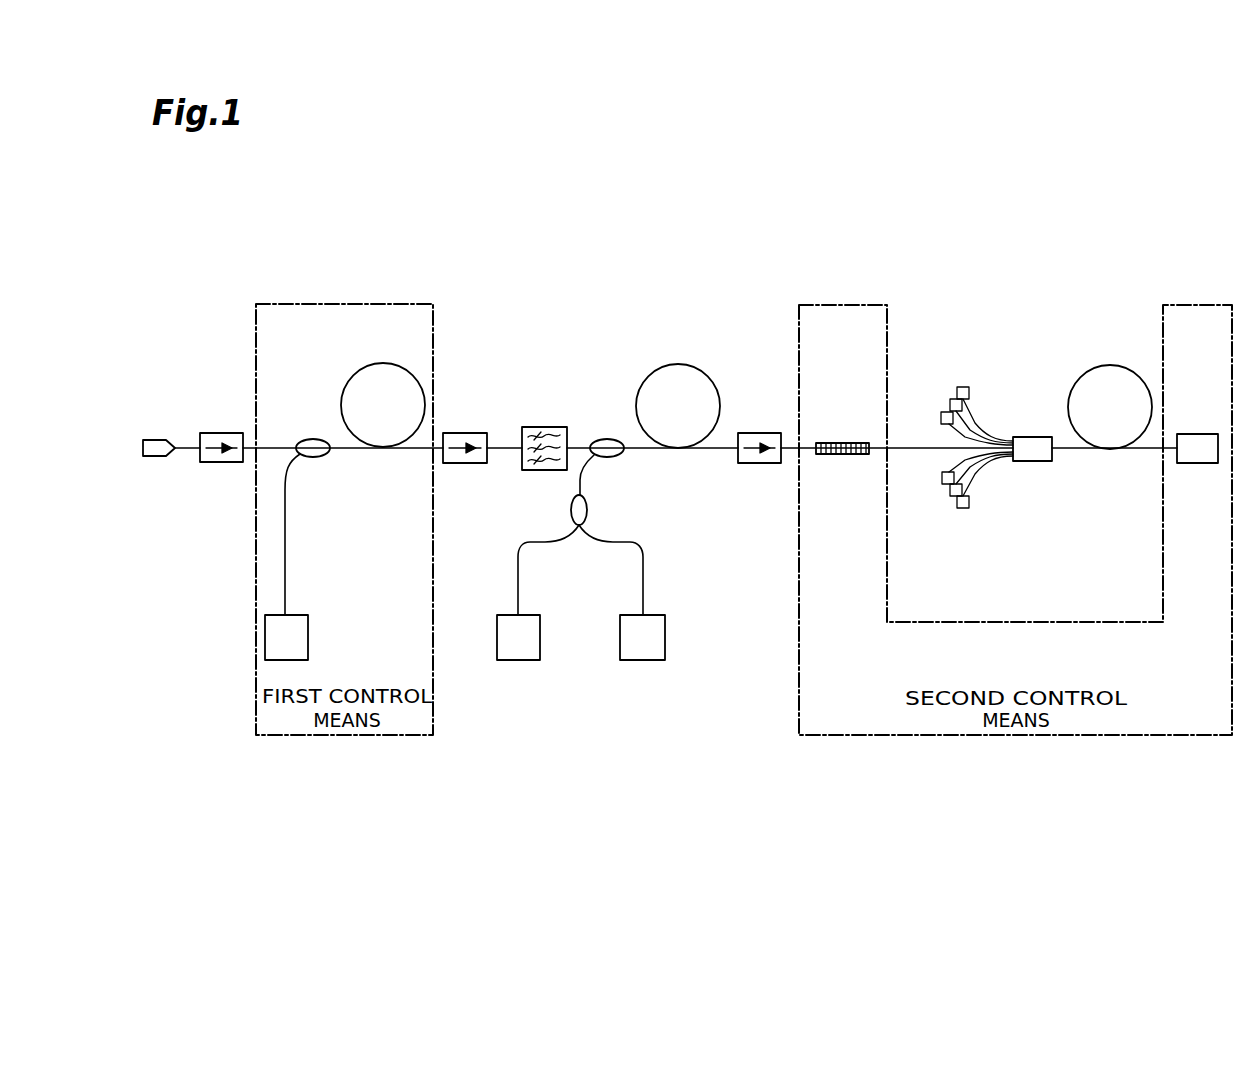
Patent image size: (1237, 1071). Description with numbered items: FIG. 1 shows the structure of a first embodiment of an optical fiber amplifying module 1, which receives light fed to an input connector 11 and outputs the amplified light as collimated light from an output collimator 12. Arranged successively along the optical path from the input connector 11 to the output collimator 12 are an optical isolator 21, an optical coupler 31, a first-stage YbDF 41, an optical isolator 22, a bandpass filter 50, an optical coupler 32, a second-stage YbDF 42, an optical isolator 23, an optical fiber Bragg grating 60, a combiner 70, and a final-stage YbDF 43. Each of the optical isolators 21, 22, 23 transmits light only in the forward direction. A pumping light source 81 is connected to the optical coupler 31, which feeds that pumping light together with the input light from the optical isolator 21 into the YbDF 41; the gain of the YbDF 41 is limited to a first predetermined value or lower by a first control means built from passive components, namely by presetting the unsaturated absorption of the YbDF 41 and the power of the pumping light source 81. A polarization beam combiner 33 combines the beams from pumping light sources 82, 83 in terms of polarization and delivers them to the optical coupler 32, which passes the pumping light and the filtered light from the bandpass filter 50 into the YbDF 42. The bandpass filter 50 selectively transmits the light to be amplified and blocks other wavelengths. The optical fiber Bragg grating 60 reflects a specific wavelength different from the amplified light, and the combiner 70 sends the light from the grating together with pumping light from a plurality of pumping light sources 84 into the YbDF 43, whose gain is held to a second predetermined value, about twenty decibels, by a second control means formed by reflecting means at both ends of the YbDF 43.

The optical fiber amplifying module 1 is at (1133, 226).
The input connector 11 is at (158, 438).
The output collimator 12 is at (1199, 434).
The optical isolator 21 is at (221, 432).
The optical isolator 22 is at (463, 432).
The optical isolator 23 is at (758, 432).
The optical coupler 31 is at (315, 438).
The optical coupler 32 is at (607, 438).
The polarization beam combiner 33 is at (588, 510).
The YbDF 41 is at (383, 362).
The YbDF 42 is at (680, 364).
The YbDF 43 is at (1112, 366).
The bandpass filter 50 is at (544, 426).
The optical fiber Bragg grating 60 is at (845, 443).
The combiner 70 is at (1025, 437).
The pumping light source 81 is at (308, 638).
The pumping light source 82 is at (497, 638).
The pumping light source 83 is at (665, 638).
The pumping light sources 84 is at (941, 410).